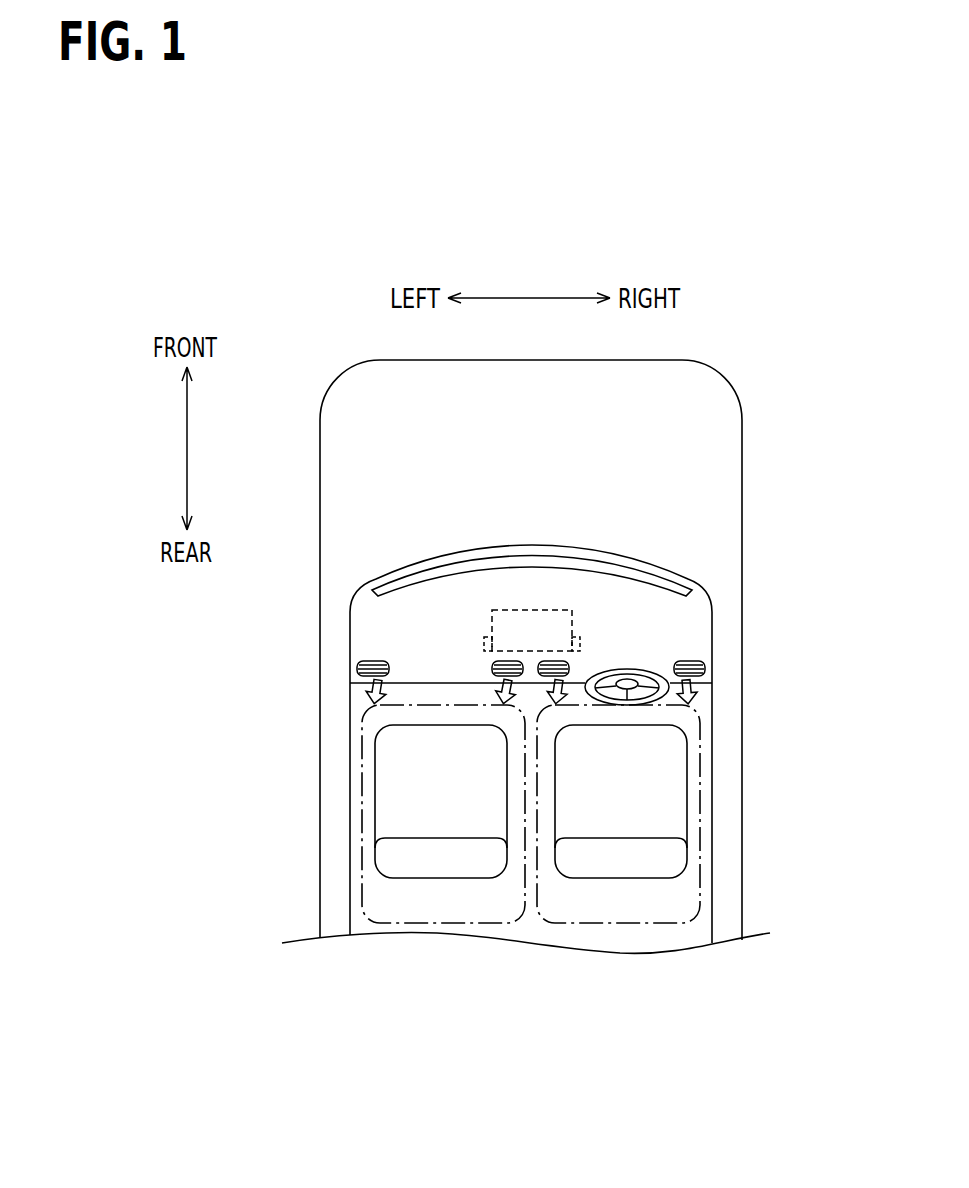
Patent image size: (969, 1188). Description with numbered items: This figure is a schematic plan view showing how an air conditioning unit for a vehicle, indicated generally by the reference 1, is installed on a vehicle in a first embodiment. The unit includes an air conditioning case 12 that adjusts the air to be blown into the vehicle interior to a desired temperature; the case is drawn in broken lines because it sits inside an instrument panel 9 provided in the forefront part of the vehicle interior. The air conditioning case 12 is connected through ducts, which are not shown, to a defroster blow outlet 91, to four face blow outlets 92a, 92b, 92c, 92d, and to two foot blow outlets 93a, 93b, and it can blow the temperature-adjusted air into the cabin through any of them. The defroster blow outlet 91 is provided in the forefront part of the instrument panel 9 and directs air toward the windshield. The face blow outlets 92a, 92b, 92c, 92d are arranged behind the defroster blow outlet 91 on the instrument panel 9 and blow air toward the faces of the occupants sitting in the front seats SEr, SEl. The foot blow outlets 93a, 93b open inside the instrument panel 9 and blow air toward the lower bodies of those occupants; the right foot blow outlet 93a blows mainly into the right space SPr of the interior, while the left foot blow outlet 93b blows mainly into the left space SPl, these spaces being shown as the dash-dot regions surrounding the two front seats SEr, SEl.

The vehicle air conditioning system 1 is at (480, 612).
The air conditioning case 12 is at (503, 610).
The instrument panel 9 is at (592, 593).
The defroster blow outlet 91 is at (642, 568).
The face blow outlet 92a is at (572, 664).
The face blow outlet 92b is at (705, 670).
The face blow outlet 92c is at (492, 670).
The face blow outlet 92d is at (357, 668).
The right foot blow outlet 93a is at (580, 648).
The left foot blow outlet 93b is at (485, 648).
The left space SPl is at (363, 772).
The right space SPr is at (700, 757).
The front seat SEl is at (433, 797).
The front seat SEr is at (633, 802).